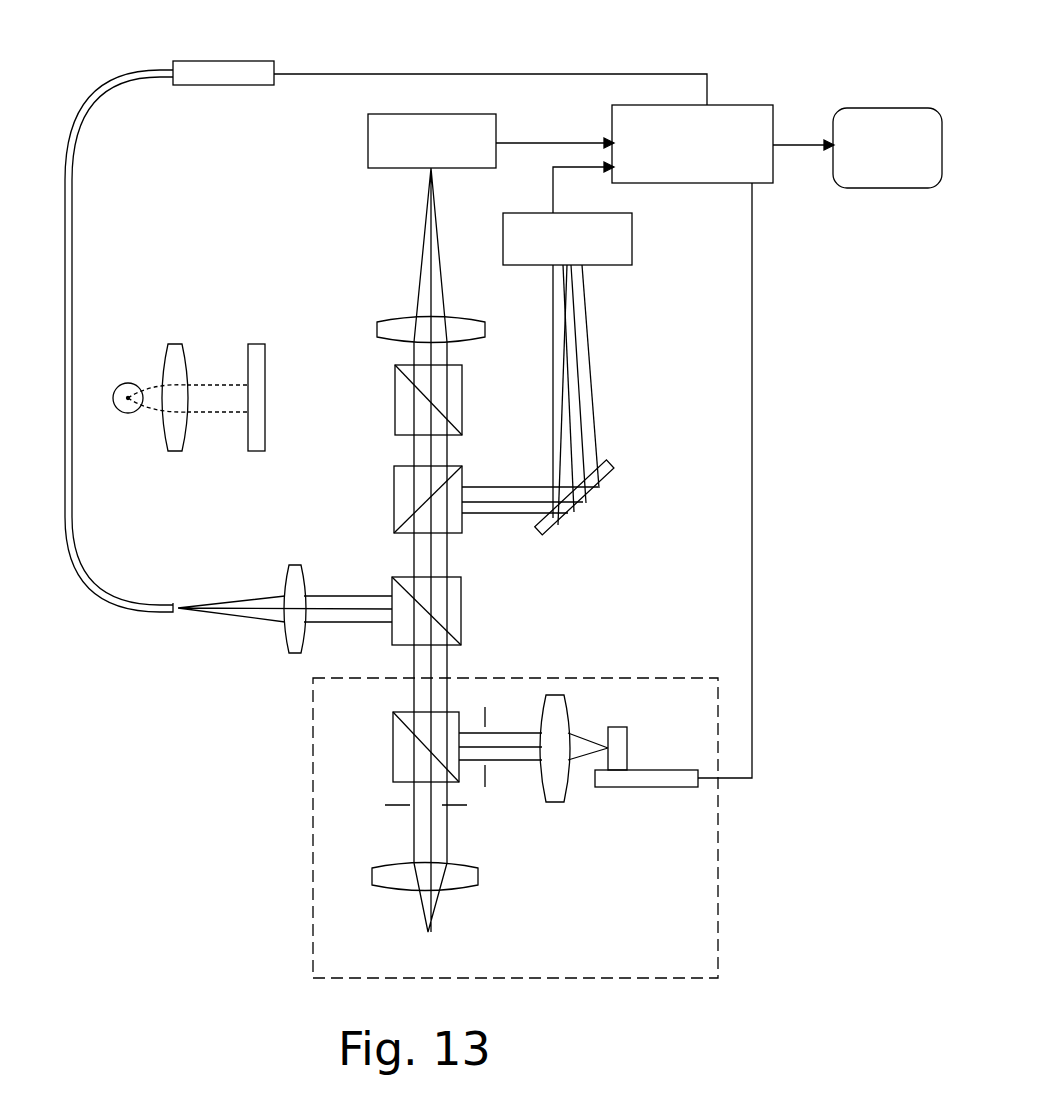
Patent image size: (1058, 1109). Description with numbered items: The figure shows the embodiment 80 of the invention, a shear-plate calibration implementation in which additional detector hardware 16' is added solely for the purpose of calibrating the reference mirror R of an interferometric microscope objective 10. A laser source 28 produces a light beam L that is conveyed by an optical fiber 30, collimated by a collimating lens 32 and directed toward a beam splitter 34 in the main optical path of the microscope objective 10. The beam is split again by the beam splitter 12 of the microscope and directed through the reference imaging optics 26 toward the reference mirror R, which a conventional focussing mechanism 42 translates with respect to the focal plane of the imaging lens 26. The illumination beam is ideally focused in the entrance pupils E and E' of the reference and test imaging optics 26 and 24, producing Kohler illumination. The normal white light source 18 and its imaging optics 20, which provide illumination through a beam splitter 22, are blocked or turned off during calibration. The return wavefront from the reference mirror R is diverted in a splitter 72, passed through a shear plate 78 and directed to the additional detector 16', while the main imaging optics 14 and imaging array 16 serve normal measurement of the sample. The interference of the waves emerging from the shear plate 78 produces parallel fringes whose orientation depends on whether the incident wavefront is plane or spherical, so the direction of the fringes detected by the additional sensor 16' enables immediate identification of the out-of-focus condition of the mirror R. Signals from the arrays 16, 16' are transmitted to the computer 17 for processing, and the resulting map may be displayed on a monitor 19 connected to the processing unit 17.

The interferometric microscope objective 10 is at (718, 905).
The beam splitter 12 is at (390, 762).
The imaging optics 14 is at (388, 327).
The imaging array 16 is at (454, 136).
The additional detector hardware 16' is at (614, 343).
The computer 17 is at (750, 105).
The white light source 18 is at (128, 385).
The monitor 19 is at (875, 108).
The imaging optics 20 is at (170, 344).
The beam splitter 22 is at (405, 405).
The test imaging optics 24 is at (468, 878).
The reference imaging optics 26 is at (560, 698).
The laser source 28 is at (230, 68).
The optical fiber 30 is at (92, 582).
The collimating lens 32 is at (296, 638).
The beam splitter 34 is at (455, 602).
The focussing mechanism 42 is at (690, 770).
The splitter 72 is at (400, 502).
The shear plate 78 is at (585, 500).
The embodiment 80 is at (270, 260).
The light beam L is at (237, 608).
The entrance pupil E is at (505, 734).
The entrance pupil E' is at (450, 825).
The reference mirror R is at (603, 730).